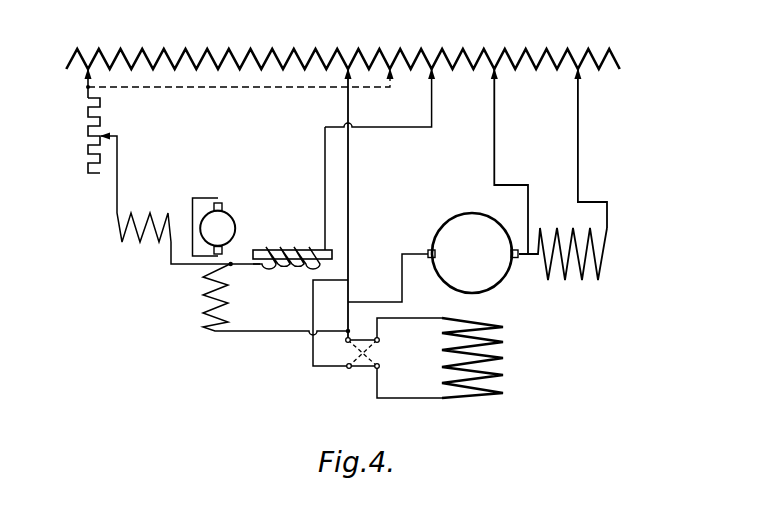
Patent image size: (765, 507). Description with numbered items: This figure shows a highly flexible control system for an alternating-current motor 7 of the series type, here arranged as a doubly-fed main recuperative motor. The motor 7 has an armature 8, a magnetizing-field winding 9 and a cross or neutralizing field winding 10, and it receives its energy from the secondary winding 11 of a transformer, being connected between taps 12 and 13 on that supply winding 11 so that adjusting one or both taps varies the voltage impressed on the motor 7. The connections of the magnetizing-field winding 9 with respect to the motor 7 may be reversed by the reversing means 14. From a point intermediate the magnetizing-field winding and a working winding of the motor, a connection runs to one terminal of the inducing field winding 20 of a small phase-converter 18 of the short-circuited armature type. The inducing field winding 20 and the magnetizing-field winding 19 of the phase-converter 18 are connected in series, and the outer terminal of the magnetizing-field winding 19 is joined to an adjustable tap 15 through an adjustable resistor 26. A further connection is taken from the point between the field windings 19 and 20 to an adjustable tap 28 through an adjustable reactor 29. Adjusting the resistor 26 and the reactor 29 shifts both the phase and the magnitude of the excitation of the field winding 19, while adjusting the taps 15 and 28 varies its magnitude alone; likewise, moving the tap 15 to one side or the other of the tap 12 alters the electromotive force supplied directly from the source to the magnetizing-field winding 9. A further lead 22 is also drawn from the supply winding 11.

The alternating-current motor 7 is at (520, 316).
The armature 8 is at (471, 227).
The magnetizing-field winding 9 is at (496, 358).
The cross or neutralizing field winding 10 is at (584, 280).
The secondary winding 11 is at (359, 49).
The tap 12 is at (349, 108).
The tap 13 is at (579, 88).
The reversing means 14 is at (362, 366).
The tap 15 is at (86, 80).
The phase-converter 18 is at (262, 207).
The magnetizing-field winding 19 is at (139, 216).
The inducing field winding 20 is at (228, 306).
The conductor 22 is at (495, 88).
The adjustable resistor 26 is at (100, 118).
The tap 28 is at (432, 88).
The adjustable reactor 29 is at (287, 262).